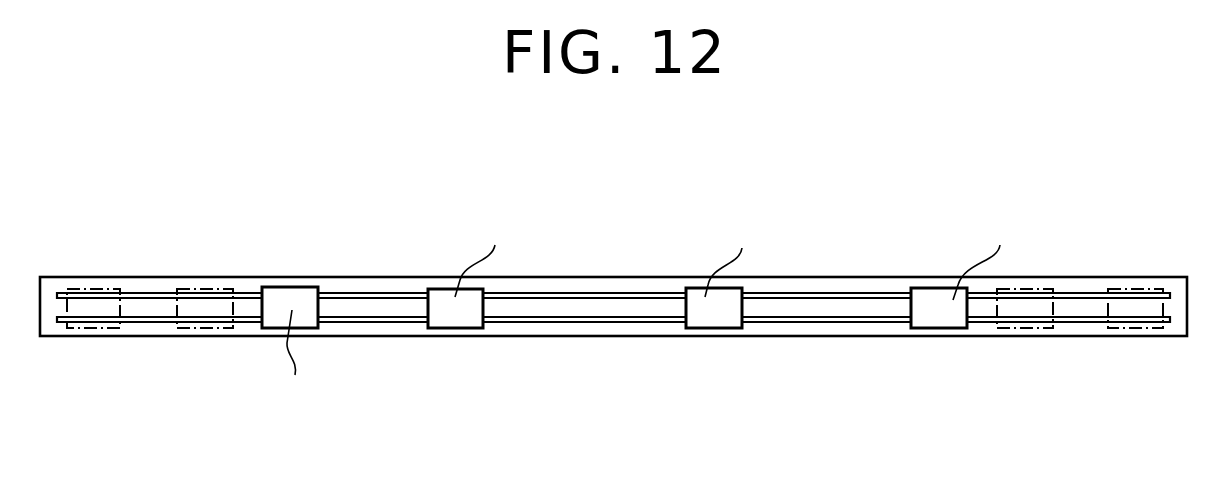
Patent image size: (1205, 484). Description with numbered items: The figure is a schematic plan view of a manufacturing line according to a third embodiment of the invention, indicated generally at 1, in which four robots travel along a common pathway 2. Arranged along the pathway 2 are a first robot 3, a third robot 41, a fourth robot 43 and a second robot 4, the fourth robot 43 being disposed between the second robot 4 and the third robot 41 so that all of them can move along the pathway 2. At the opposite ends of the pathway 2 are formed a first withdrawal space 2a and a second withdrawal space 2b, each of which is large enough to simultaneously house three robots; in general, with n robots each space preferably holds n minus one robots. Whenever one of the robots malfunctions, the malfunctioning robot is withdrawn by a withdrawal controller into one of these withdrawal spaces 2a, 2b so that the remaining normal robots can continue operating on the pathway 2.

The robot system 1 is at (830, 172).
The pathway 2 is at (380, 278).
The first withdrawal space 2a is at (142, 310).
The second withdrawal space 2b is at (1027, 308).
The first robot 3 is at (286, 287).
The second robot 4 is at (943, 288).
The third robot 41 is at (459, 328).
The fourth robot 43 is at (716, 328).